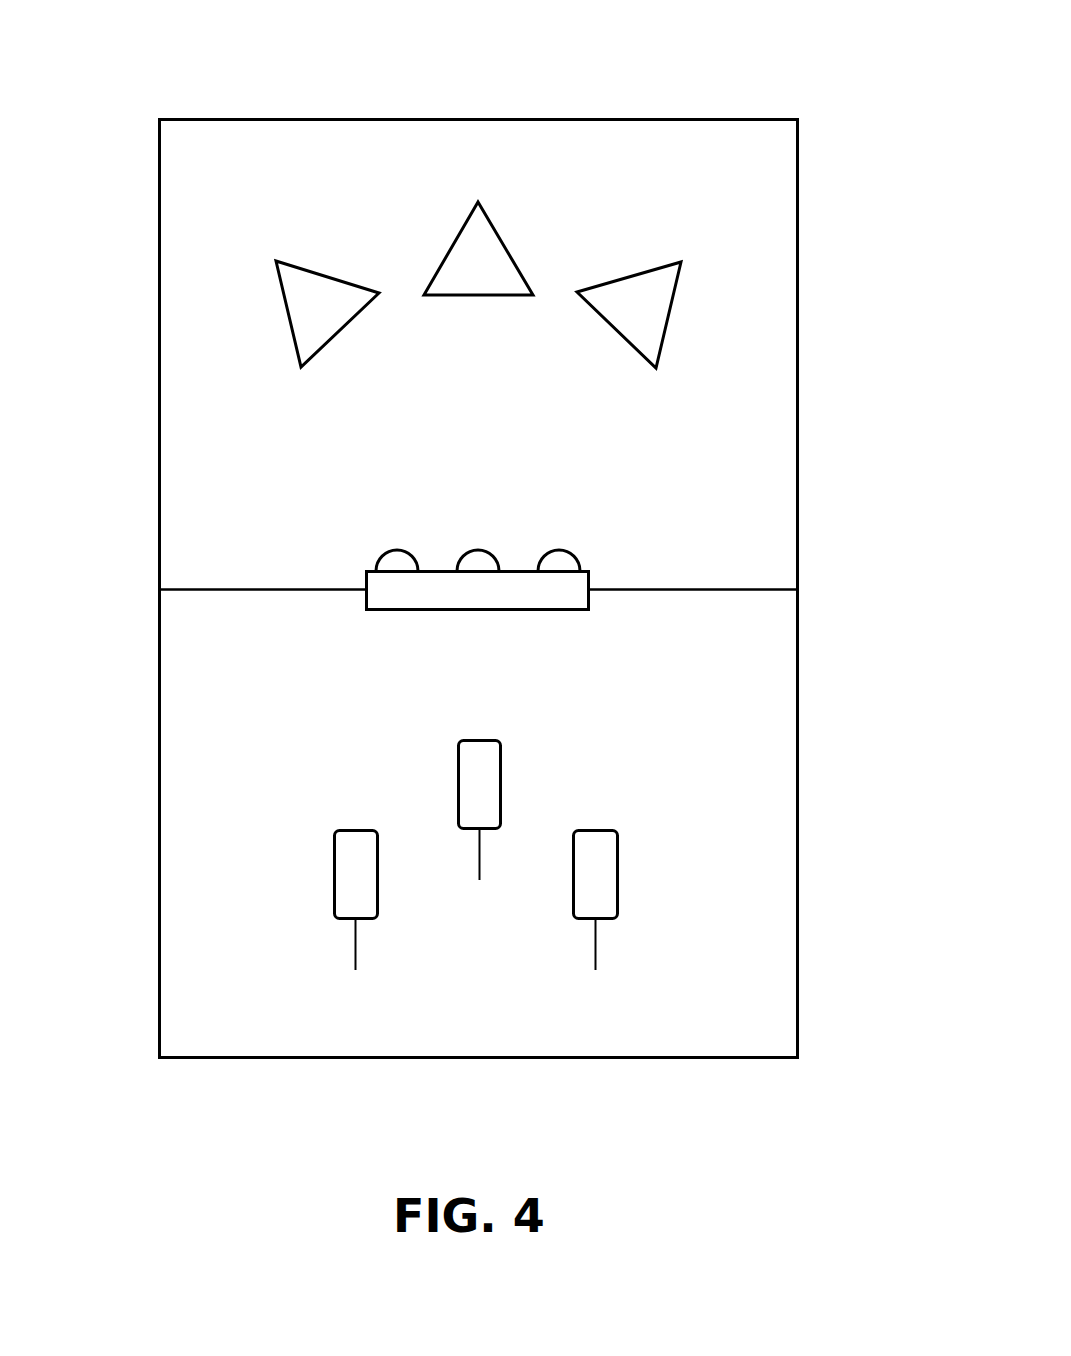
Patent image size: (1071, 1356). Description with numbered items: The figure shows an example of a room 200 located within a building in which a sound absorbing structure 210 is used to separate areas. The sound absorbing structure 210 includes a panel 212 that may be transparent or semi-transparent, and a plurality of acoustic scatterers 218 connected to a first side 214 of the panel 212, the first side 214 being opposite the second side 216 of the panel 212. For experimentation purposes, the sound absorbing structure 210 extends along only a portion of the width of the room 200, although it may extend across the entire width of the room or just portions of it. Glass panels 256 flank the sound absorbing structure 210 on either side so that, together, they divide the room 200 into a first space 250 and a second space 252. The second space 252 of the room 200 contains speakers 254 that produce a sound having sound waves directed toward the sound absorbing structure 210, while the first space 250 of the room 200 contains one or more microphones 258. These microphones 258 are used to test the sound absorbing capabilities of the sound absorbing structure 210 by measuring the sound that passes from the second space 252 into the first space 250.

The room 200 is at (692, 118).
The sound absorbing structure 210 is at (383, 600).
The panel 212 is at (568, 596).
The first side 214 is at (514, 571).
The second side 216 is at (535, 611).
The acoustic scatterers 218 is at (383, 555).
The first space 250 is at (210, 797).
The second space 252 is at (196, 480).
The speakers 254 is at (506, 247).
The glass panels 256 is at (226, 589).
The microphones 258 is at (500, 767).